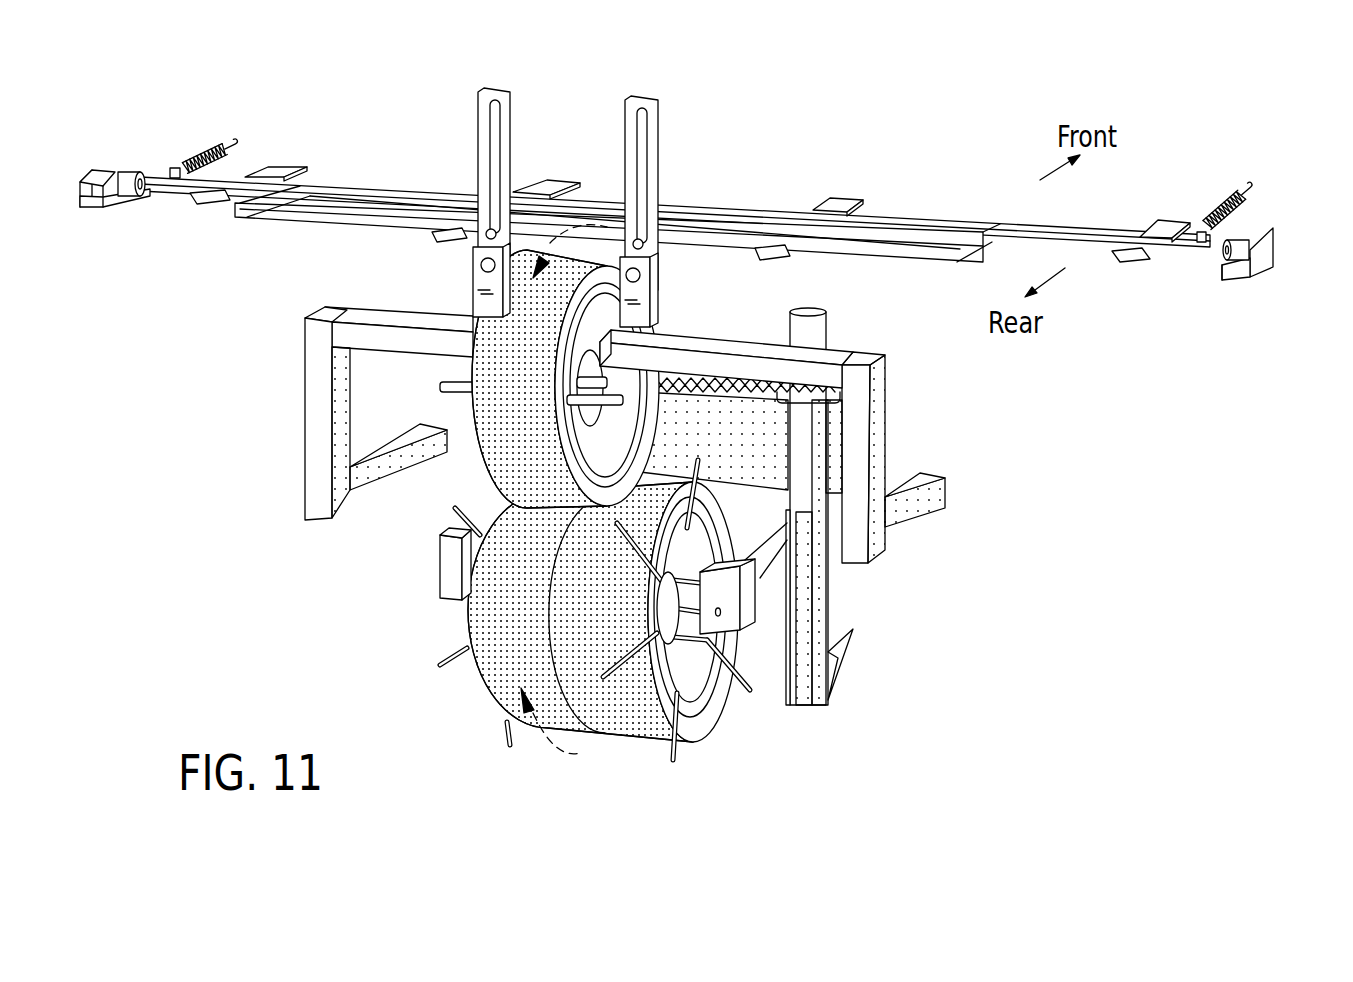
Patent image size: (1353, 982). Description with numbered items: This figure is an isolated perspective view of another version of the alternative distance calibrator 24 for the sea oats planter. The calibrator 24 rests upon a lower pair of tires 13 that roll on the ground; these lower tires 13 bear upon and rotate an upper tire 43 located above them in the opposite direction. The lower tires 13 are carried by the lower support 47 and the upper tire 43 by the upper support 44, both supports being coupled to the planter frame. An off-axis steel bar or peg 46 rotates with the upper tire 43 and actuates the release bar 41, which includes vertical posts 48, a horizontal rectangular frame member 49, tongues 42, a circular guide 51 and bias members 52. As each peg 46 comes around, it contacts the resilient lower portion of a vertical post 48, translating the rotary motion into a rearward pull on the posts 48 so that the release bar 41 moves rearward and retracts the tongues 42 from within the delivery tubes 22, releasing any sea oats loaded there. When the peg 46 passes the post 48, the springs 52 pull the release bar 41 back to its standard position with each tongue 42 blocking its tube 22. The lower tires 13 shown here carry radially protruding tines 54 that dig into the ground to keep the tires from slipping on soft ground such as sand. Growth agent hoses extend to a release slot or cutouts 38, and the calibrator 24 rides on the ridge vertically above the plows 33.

The lower tires 13 is at (576, 640).
The delivery tubes 22 is at (856, 499).
The distance calibrator 24 is at (336, 614).
The plows 33 is at (877, 664).
The release slot or cutouts 38 is at (871, 744).
The release bar 41 is at (675, 161).
The tongues 42 is at (690, 175).
The upper tire 43 is at (515, 366).
The upper support 44 is at (610, 435).
The peg 46 is at (533, 401).
The lower support 47 is at (572, 536).
The vertical posts 48 is at (565, 168).
The horizontal rectangular frame member 49 is at (736, 163).
The circular guide 51 is at (699, 183).
The bias members 52 is at (713, 155).
The tines 54 is at (566, 619).